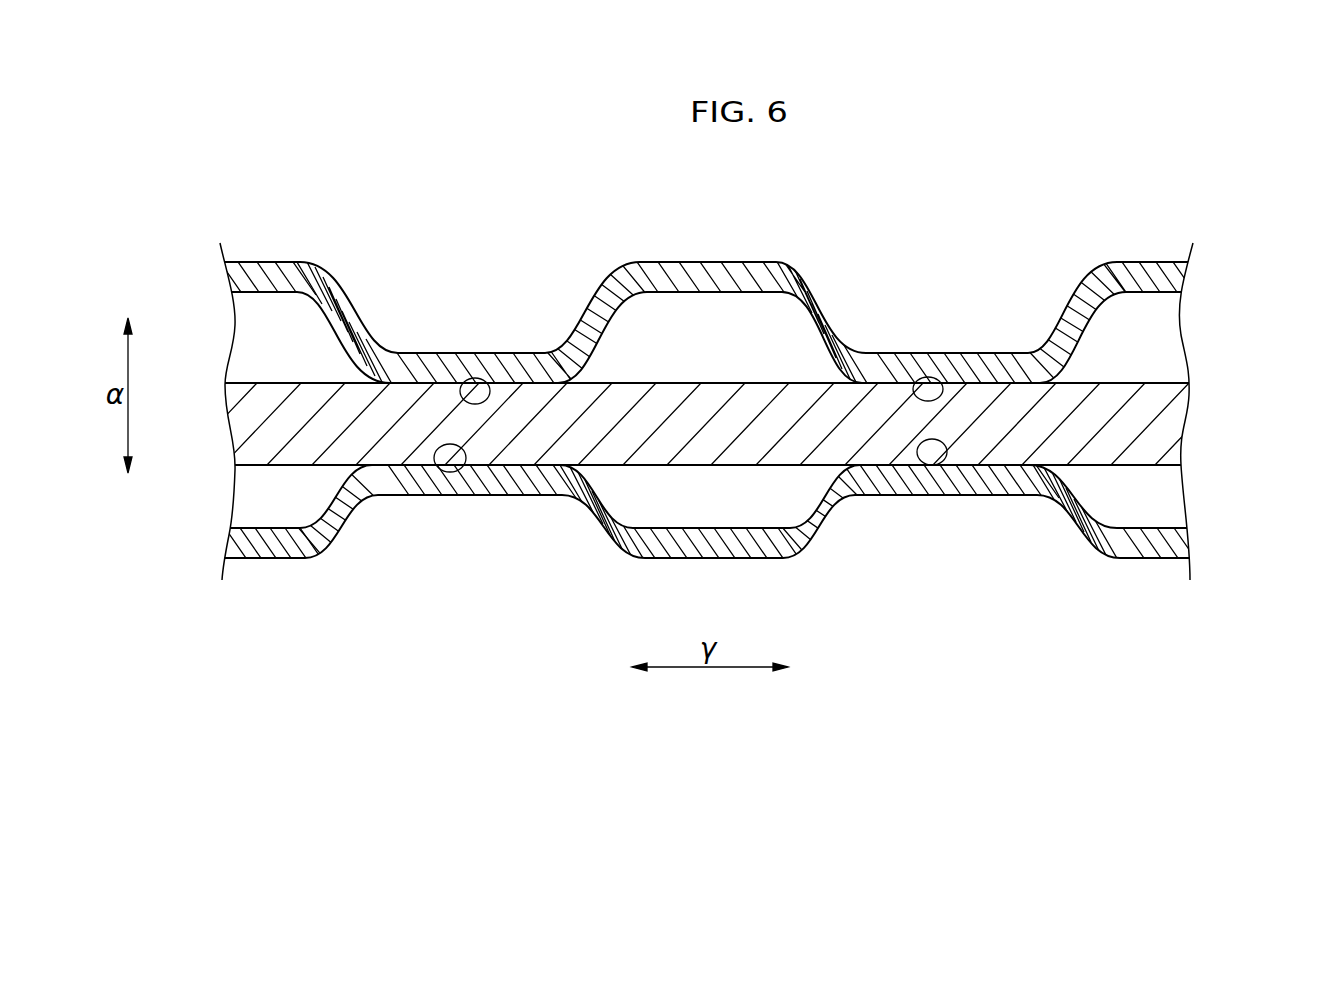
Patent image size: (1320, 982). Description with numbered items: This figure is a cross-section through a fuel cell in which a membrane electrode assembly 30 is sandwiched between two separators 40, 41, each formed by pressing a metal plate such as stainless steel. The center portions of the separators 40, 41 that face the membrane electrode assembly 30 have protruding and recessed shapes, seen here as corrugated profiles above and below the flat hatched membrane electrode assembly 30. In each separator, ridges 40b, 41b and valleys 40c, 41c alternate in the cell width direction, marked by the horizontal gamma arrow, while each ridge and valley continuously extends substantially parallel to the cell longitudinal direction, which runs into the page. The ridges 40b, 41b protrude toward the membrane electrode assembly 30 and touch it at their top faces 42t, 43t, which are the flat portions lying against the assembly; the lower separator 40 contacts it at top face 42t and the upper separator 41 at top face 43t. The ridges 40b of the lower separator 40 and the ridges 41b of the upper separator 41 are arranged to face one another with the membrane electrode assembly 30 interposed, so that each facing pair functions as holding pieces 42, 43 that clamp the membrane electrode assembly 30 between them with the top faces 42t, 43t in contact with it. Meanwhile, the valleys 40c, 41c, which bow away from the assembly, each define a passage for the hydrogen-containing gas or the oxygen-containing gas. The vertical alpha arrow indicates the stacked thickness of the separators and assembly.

The membrane electrode assembly 30 is at (1203, 411).
The separator 40 is at (1155, 590).
The separator 41 is at (1155, 238).
The holding piece 42 is at (1013, 482).
The holding piece 43 is at (1013, 370).
The top face 42t is at (457, 472).
The top face 43t is at (482, 378).
The ridge 40b is at (323, 480).
The ridge 41b is at (323, 362).
The valley 40c is at (272, 527).
The valley 41c is at (272, 293).